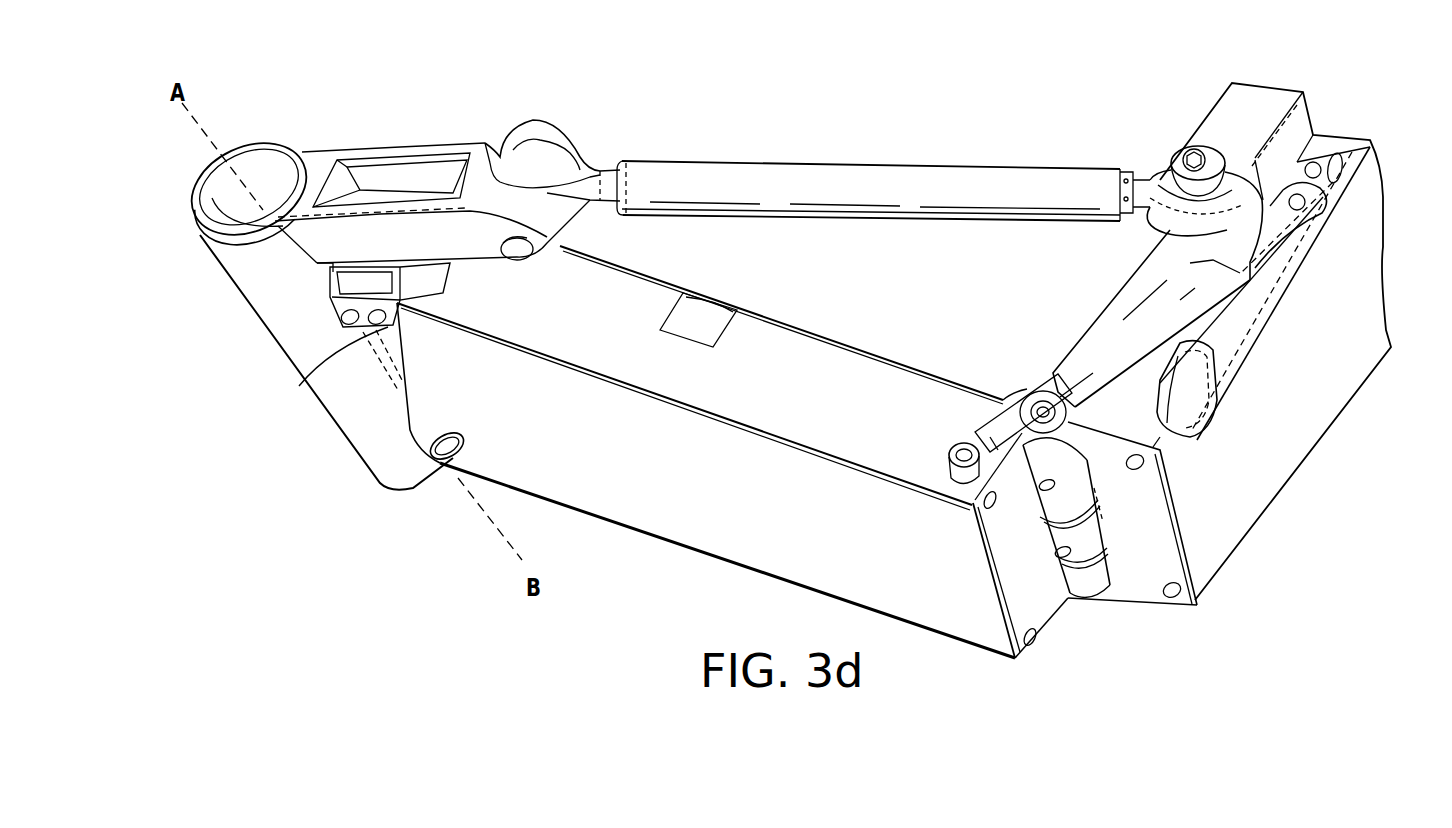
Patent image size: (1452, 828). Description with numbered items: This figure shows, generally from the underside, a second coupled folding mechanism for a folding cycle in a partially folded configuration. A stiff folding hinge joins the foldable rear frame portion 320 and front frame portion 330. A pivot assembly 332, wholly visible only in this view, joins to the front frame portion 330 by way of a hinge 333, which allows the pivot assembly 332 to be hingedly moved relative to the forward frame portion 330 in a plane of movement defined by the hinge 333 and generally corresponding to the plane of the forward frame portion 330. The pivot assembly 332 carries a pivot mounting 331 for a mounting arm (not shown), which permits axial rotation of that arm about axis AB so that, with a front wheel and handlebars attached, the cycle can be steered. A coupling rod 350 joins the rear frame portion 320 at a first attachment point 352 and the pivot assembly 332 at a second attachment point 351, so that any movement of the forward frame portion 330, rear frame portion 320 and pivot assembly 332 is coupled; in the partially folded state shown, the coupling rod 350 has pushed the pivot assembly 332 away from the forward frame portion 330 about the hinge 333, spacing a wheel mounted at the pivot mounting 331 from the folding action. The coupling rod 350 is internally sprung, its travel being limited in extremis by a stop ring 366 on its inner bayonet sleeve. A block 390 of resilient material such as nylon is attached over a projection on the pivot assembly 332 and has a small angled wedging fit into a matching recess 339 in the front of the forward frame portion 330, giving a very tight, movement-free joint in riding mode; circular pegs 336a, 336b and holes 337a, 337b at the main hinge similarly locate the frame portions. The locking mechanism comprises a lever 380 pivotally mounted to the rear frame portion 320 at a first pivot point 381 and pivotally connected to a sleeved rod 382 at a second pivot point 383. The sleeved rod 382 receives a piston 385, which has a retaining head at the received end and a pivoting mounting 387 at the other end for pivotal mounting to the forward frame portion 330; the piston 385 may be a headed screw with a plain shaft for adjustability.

The rear frame portion 320 is at (1353, 393).
The front frame portion 330 is at (762, 560).
The pivot mounting 331 is at (197, 208).
The pivot assembly 332 is at (318, 157).
The hinge 333 is at (448, 458).
The circular peg 336a is at (1172, 600).
The circular peg 336b is at (1137, 472).
The hole 337a is at (1035, 645).
The hole 337b is at (985, 505).
The recess 339 is at (324, 371).
The coupling rod 350 is at (914, 177).
The second attachment point 351 is at (540, 153).
The first attachment point 352 is at (1175, 150).
The stop ring 366 is at (1127, 170).
The lever 380 is at (1217, 412).
The first pivot point 381 is at (1318, 162).
The sleeved rod 382 is at (1107, 333).
The second pivot point 383 is at (1306, 203).
The piston 385 is at (1033, 392).
The pivoting mounting 387 is at (952, 452).
The block 390 is at (332, 306).